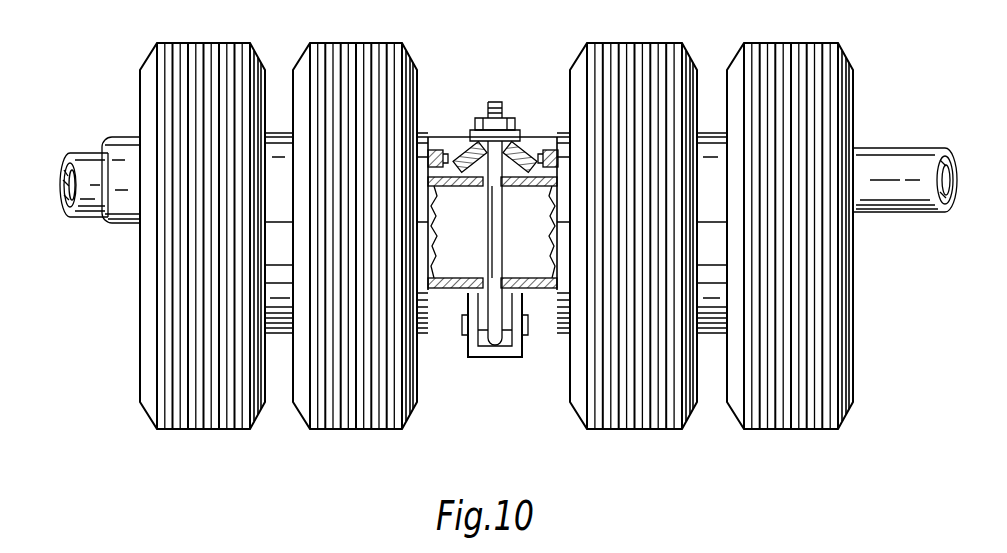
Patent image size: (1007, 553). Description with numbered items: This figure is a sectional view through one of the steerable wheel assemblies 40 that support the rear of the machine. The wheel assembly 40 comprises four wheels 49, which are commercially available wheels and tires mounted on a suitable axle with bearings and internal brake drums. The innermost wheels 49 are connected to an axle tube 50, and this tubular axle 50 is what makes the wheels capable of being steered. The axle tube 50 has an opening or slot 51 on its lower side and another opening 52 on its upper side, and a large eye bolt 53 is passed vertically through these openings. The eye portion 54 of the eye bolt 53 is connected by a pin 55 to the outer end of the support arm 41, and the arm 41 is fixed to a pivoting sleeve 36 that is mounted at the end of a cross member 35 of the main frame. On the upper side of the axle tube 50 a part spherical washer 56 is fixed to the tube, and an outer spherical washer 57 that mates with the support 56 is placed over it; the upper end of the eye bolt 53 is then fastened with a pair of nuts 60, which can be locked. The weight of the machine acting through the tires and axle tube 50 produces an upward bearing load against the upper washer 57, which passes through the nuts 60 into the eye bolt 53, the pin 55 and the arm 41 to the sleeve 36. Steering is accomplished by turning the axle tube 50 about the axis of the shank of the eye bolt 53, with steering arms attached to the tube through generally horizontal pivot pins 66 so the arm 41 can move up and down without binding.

The cross member 35 is at (885, 146).
The pivoting sleeve 36 is at (115, 138).
The wheel assembly 40 is at (406, 431).
The support arm 41 is at (516, 338).
The wheel 49 is at (298, 70).
The axle tube 50 is at (451, 290).
The opening 51 is at (510, 278).
The opening 52 is at (480, 190).
The eye bolt 53 is at (489, 229).
The eye portion 54 is at (502, 342).
The pin 55 is at (465, 330).
The part spherical washer 56 is at (513, 190).
The outer spherical washer 57 is at (516, 145).
The nut 60 is at (507, 120).
The pivot pin 66 is at (440, 150).